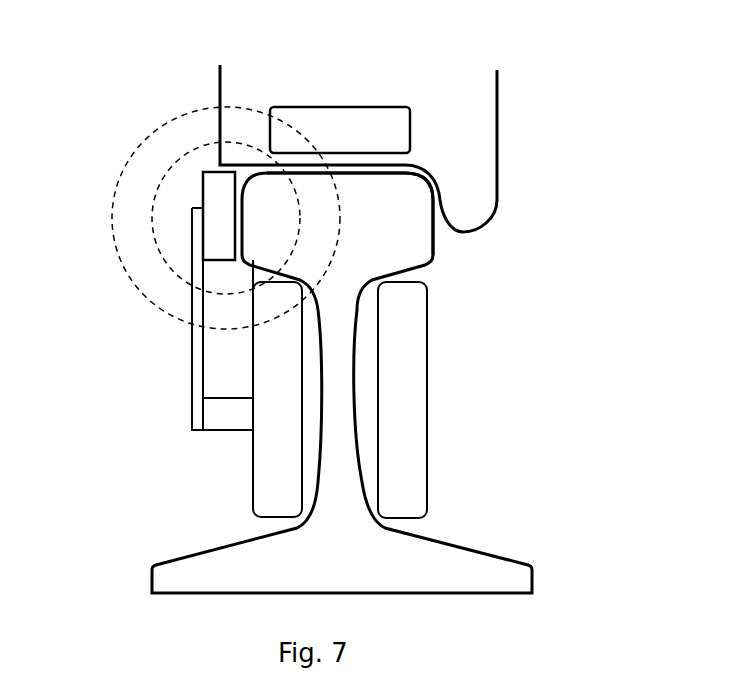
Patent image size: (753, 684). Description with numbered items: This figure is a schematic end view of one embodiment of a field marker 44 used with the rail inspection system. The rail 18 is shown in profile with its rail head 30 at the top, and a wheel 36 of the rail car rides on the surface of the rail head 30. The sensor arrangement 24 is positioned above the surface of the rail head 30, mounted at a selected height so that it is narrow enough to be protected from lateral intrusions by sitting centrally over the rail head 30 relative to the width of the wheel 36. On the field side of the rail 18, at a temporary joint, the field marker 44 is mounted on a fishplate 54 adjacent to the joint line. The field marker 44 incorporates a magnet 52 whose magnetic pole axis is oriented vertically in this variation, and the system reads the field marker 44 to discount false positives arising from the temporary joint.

The rail 18 is at (382, 412).
The sensor arrangement 24 is at (353, 122).
The rail head 30 is at (413, 238).
The wheel 36 is at (468, 122).
The field marker 44 is at (116, 371).
The magnet 52 is at (212, 190).
The fishplate 54 is at (253, 452).